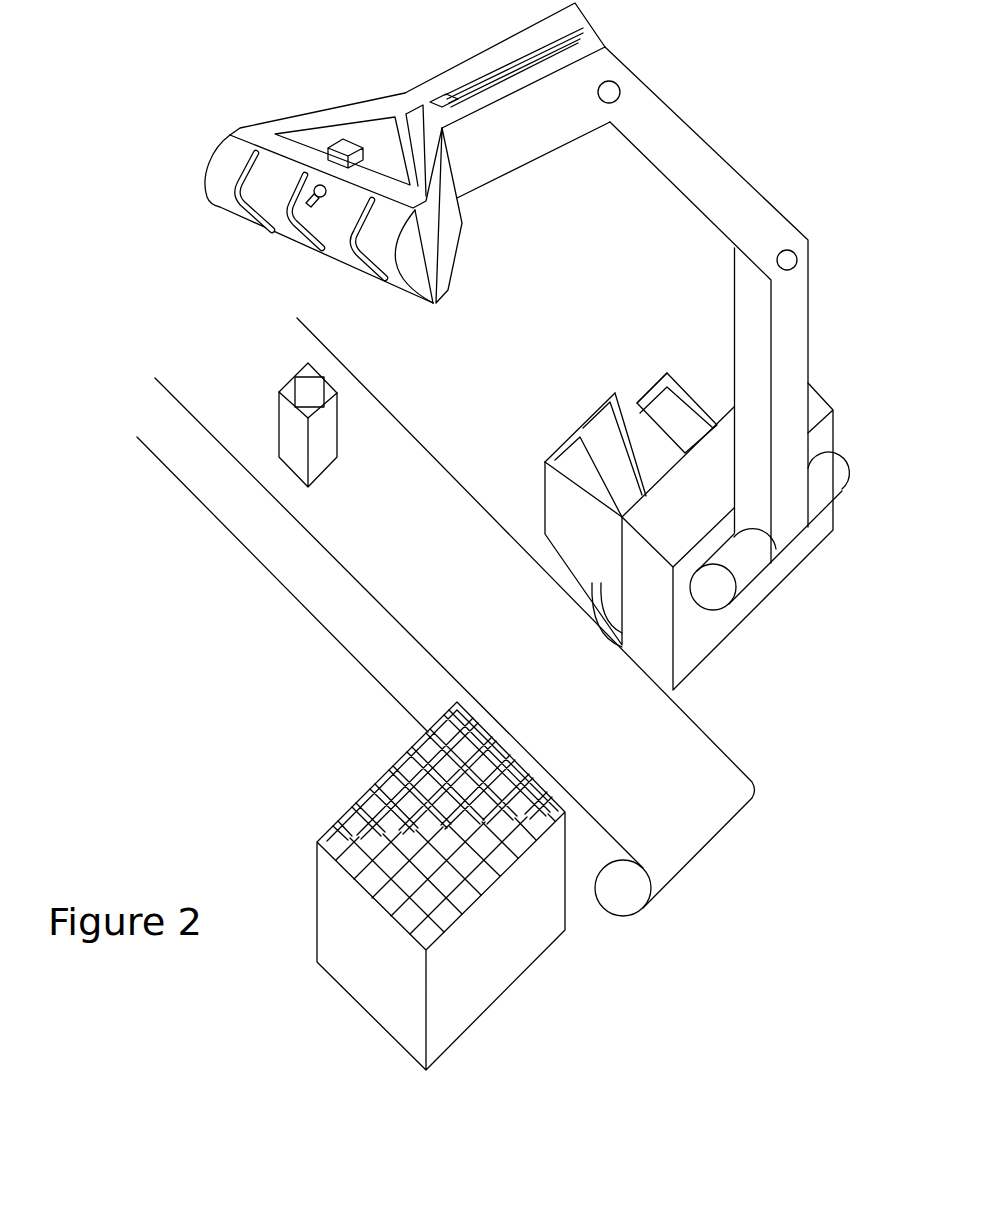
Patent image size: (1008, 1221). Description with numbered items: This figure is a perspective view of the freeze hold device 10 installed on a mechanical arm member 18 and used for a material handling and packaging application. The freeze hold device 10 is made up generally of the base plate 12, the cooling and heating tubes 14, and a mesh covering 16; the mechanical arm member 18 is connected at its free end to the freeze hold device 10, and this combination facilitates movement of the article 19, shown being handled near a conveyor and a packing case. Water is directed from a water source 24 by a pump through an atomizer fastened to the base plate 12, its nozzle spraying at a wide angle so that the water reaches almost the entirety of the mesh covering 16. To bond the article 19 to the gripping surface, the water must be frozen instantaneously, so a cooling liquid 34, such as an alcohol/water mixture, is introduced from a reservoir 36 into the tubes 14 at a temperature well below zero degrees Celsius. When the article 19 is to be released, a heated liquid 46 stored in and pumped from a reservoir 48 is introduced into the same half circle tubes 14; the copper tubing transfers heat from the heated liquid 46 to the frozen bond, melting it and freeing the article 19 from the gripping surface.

The freeze hold device 10 is at (303, 103).
The base plate 12 is at (428, 252).
The cooling and heating tubes 14 is at (282, 222).
The mesh covering 16 is at (415, 268).
The mechanical arm member 18 is at (752, 200).
The article 19 is at (297, 435).
The water source 24 is at (660, 378).
The cooling liquid 34 is at (643, 450).
The reservoir 36 is at (588, 417).
The heated liquid 46 is at (577, 463).
The reservoir 48 is at (545, 485).